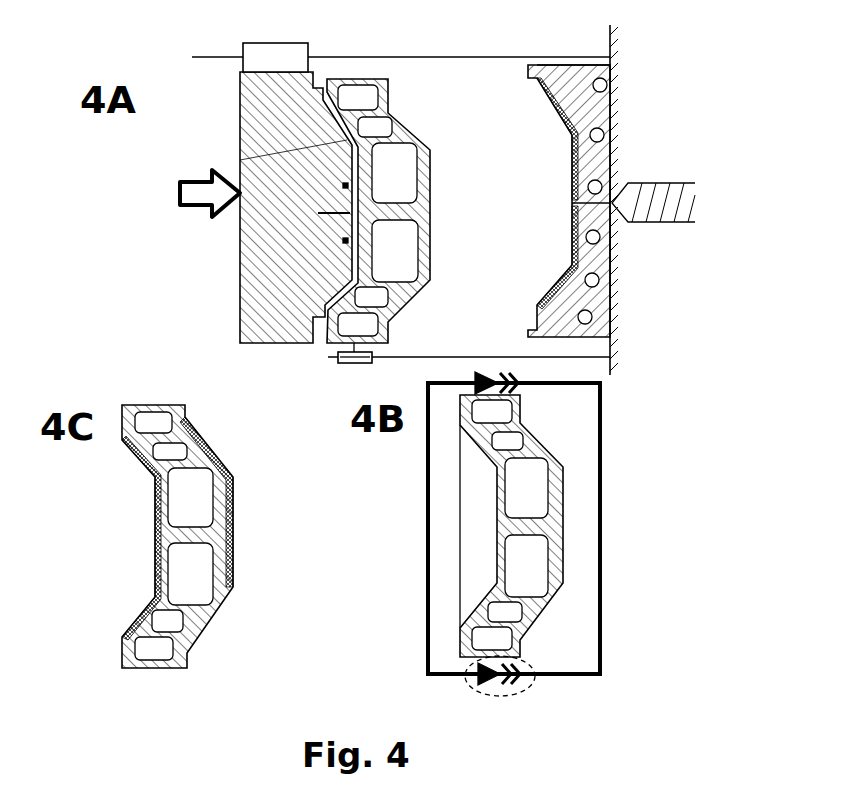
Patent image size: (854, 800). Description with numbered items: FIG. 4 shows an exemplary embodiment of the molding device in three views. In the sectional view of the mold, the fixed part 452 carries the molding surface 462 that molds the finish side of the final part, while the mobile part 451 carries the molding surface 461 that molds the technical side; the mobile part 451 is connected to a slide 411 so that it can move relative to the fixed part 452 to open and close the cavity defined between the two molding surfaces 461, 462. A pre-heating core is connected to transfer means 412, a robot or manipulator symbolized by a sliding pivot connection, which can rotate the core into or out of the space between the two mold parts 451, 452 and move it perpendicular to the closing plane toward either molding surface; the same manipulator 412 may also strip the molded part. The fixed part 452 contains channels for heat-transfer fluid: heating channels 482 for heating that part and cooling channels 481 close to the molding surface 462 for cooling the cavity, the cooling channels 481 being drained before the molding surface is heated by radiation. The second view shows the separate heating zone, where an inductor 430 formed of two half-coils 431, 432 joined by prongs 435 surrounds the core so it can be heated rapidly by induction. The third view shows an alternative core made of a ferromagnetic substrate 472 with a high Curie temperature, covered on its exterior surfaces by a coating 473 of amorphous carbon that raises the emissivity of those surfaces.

The slide 411 is at (278, 43).
The transfer means 412 is at (352, 365).
The inductor 430 is at (529, 545).
The half-coil 431 is at (428, 582).
The half-coil 432 is at (602, 590).
The prongs 435 is at (506, 694).
The mobile part 451 is at (265, 252).
The fixed part 452 is at (612, 149).
The molding surface 461 is at (240, 160).
The molding surface 462 is at (558, 132).
The substrate 472 is at (182, 554).
The coating 473 is at (160, 518).
The cooling channels 481 is at (583, 255).
The heating channels 482 is at (606, 70).